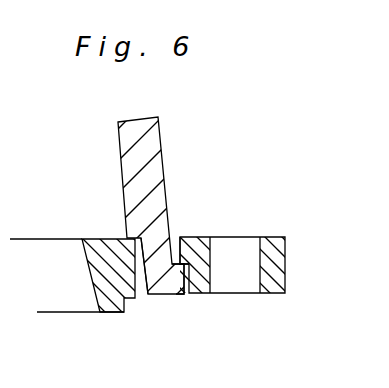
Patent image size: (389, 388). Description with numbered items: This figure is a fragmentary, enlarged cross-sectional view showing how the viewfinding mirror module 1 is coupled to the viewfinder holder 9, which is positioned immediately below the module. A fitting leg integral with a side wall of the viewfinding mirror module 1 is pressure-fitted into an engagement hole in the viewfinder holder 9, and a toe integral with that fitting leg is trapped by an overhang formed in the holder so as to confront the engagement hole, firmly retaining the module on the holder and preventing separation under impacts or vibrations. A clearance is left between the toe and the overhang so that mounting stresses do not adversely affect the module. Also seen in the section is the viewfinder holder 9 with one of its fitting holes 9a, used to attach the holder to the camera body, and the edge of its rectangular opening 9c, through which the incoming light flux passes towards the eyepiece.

The viewfinding mirror module 1 is at (152, 144).
The viewfinder holder 9 is at (106, 303).
The fitting hole 9a is at (246, 250).
The rectangular opening 9c is at (48, 302).